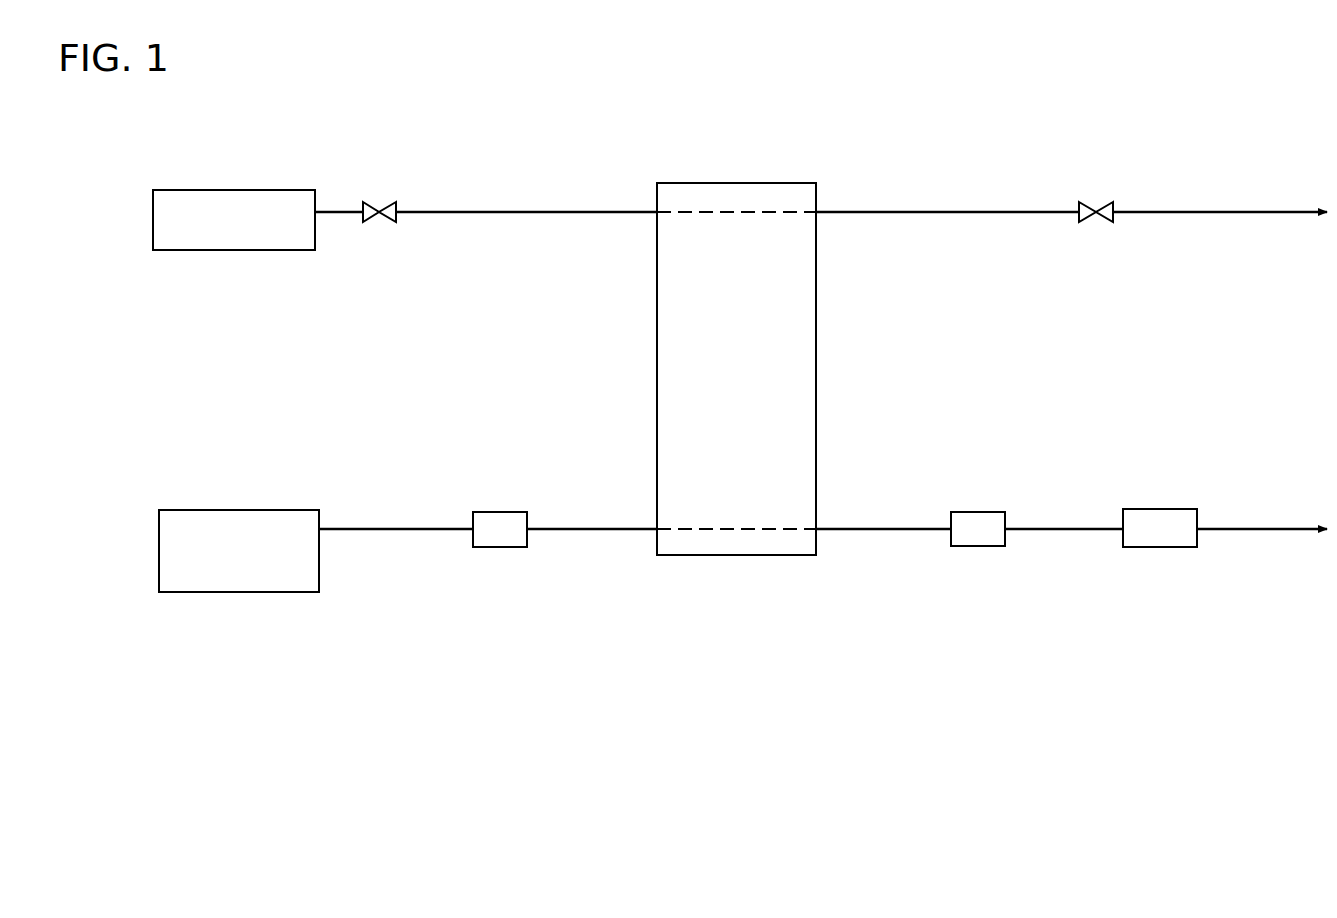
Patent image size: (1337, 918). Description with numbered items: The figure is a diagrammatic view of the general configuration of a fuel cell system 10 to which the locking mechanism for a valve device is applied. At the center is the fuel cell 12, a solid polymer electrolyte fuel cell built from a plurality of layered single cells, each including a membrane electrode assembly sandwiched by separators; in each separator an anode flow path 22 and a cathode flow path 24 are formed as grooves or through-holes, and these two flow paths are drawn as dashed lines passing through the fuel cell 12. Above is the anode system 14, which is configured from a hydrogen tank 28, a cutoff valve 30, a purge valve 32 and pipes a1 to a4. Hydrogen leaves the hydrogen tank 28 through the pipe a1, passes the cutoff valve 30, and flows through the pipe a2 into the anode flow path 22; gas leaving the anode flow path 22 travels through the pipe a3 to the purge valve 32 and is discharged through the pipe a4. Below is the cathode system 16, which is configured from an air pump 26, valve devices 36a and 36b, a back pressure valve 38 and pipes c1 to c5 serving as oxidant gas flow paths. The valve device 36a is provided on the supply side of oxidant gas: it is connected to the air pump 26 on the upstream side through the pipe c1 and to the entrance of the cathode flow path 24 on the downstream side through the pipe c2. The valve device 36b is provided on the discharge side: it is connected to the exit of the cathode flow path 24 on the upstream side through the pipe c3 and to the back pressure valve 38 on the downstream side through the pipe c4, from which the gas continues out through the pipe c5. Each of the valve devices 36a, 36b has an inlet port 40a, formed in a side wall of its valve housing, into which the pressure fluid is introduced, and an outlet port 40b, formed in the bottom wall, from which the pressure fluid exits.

The fuel cell system 10 is at (913, 114).
The fuel cell 12 is at (740, 182).
The anode system 14 is at (357, 141).
The cathode system 16 is at (353, 622).
The anode flow path 22 is at (724, 213).
The cathode flow path 24 is at (748, 527).
The air pump 26 is at (278, 510).
The hydrogen tank 28 is at (276, 190).
The cutoff valve 30 is at (386, 203).
The purge valve 32 is at (1104, 203).
The valve device 36a is at (511, 511).
The valve device 36b is at (985, 511).
The back pressure valve 38 is at (1139, 548).
The inlet port 40a is at (473, 526).
The outlet port 40b is at (528, 533).
The pipe a1 is at (339, 210).
The pipe a2 is at (498, 211).
The pipe a3 is at (970, 211).
The pipe a4 is at (1180, 211).
The pipe c1 is at (345, 533).
The pipe c2 is at (632, 527).
The pipe c3 is at (832, 531).
The pipe c4 is at (1110, 531).
The pipe c5 is at (1210, 531).